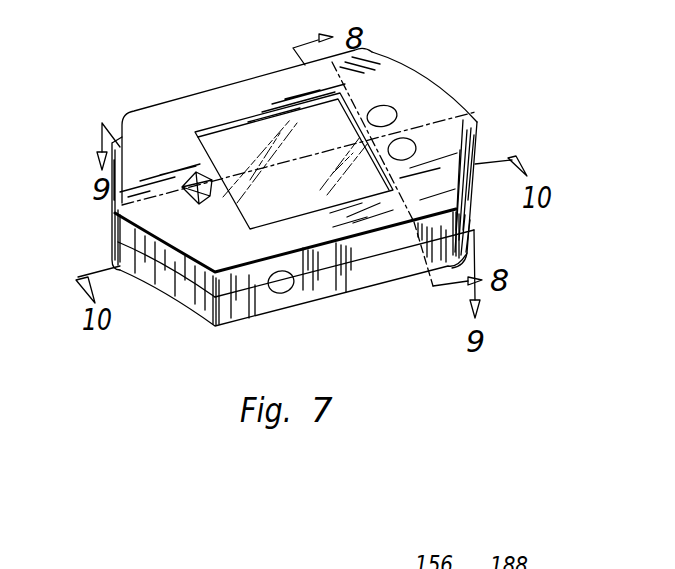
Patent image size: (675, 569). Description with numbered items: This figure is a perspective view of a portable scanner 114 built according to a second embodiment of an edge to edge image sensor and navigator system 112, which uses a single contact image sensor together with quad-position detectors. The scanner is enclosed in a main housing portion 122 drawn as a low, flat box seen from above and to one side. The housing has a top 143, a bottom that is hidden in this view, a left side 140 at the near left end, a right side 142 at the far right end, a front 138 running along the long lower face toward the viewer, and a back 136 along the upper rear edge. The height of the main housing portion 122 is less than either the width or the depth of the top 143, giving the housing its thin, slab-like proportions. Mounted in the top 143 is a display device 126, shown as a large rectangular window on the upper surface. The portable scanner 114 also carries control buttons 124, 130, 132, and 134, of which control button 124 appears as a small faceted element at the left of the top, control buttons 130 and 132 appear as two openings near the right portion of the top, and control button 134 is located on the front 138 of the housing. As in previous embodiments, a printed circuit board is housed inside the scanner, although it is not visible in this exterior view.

The edge to edge image sensor and navigator system 112 is at (265, 320).
The portable scanner 114 is at (218, 58).
The main housing portion 122 is at (478, 168).
The control button 124 is at (200, 200).
The display device 126 is at (232, 133).
The control button 130 is at (383, 114).
The control button 132 is at (403, 148).
The control button 134 is at (283, 286).
The back 136 is at (358, 49).
The front 138 is at (360, 275).
The left side 140 is at (113, 211).
The right side 142 is at (476, 119).
The top 143 is at (213, 105).